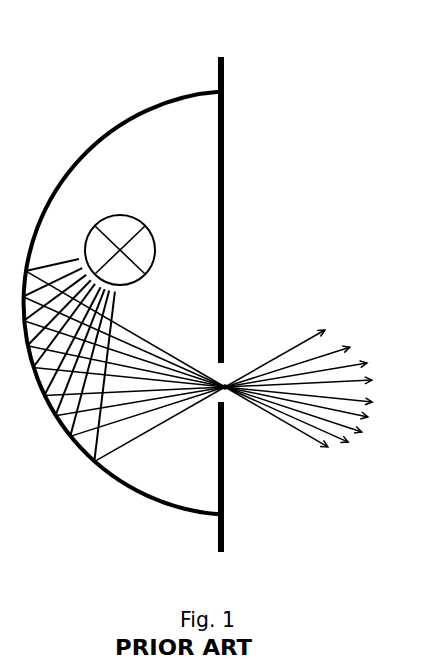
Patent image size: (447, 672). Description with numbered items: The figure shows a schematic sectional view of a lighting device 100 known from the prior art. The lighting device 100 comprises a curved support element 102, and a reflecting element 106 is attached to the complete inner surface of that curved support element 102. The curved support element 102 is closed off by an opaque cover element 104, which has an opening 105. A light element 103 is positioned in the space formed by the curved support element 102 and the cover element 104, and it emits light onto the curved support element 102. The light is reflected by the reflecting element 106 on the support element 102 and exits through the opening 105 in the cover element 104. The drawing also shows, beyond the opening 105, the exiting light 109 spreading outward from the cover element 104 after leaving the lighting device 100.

The lighting device 100 is at (256, 58).
The curved support element 102 is at (83, 139).
The light element 103 is at (156, 206).
The opaque cover element 104 is at (233, 228).
The opening 105 is at (234, 407).
The reflecting element 106 is at (44, 406).
The output light beam 109 is at (265, 295).